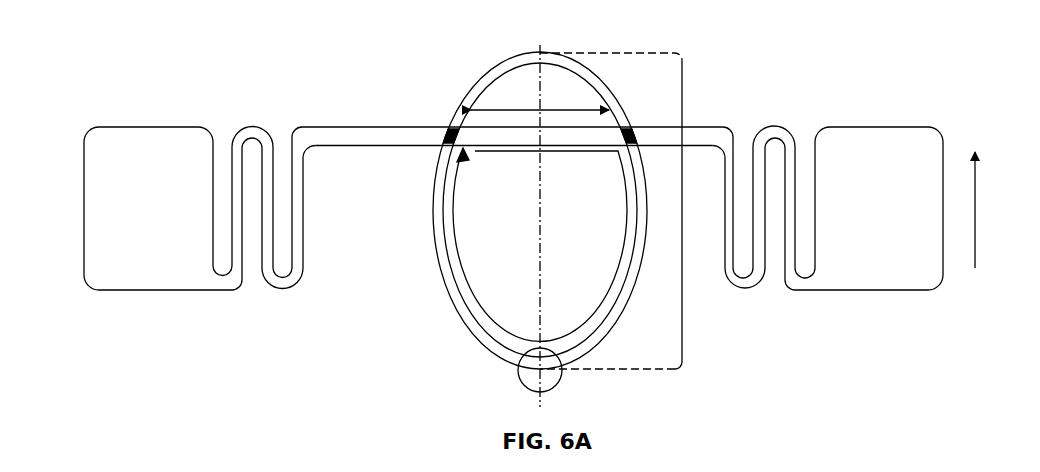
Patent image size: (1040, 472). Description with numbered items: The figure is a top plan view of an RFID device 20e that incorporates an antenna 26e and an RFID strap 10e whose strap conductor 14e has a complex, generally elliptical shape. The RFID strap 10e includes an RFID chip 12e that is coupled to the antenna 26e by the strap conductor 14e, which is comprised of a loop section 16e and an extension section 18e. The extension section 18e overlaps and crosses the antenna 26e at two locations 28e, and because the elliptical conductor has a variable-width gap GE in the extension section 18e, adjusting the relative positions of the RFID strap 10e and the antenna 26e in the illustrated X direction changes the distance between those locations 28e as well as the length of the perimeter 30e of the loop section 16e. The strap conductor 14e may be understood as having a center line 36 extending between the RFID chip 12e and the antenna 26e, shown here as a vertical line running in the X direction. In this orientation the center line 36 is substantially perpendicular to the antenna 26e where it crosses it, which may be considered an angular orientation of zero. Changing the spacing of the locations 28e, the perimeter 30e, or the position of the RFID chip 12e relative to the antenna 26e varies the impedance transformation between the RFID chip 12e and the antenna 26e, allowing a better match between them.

The RFID strap 10e is at (474, 356).
The RFID chip 12e is at (558, 378).
The strap conductor 14e is at (450, 110).
The loop section 16e is at (684, 260).
The extension section 18e is at (684, 107).
The RFID device 20e is at (920, 92).
The antenna 26e is at (720, 124).
The locations 28e is at (447, 136).
The perimeter 30e is at (453, 236).
The center line 36 is at (540, 222).
The variable-width gap GE is at (574, 107).
The x direction X is at (977, 212).